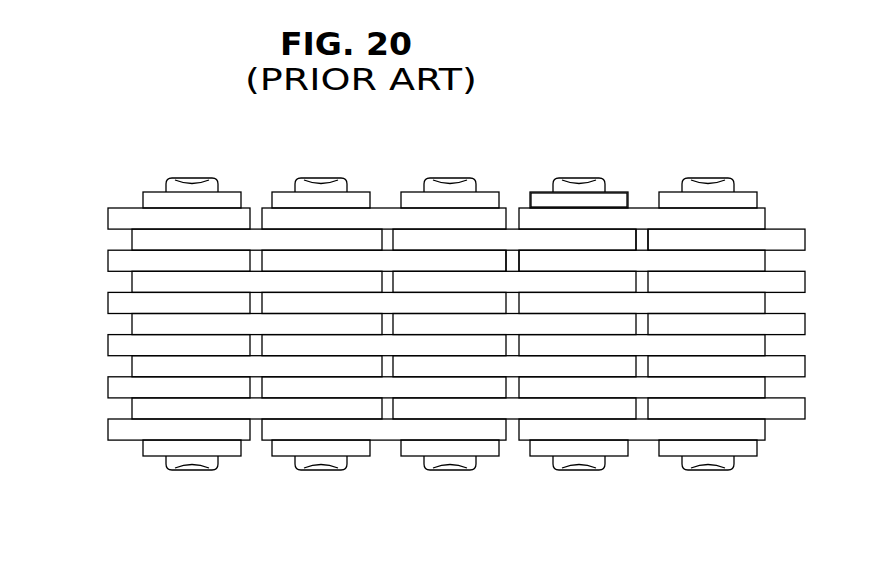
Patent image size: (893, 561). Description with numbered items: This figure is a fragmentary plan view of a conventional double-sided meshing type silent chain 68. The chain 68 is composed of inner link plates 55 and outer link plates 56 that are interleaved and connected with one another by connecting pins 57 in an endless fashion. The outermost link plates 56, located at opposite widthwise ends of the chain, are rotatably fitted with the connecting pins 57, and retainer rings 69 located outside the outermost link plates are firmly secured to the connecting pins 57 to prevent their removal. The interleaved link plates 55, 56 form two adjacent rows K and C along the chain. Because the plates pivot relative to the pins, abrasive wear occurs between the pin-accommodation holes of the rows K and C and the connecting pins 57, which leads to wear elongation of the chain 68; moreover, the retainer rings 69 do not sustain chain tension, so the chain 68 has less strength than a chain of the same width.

The inner link plates 55 is at (125, 322).
The outer link plates 56 is at (407, 238).
The retainer rings 69 is at (417, 193).
The connecting pins 57 is at (603, 188).
The double-sided meshing type silent chain 68 is at (573, 172).
The row of interleaved link plates K is at (500, 280).
The row of interleaved link plates C is at (560, 260).